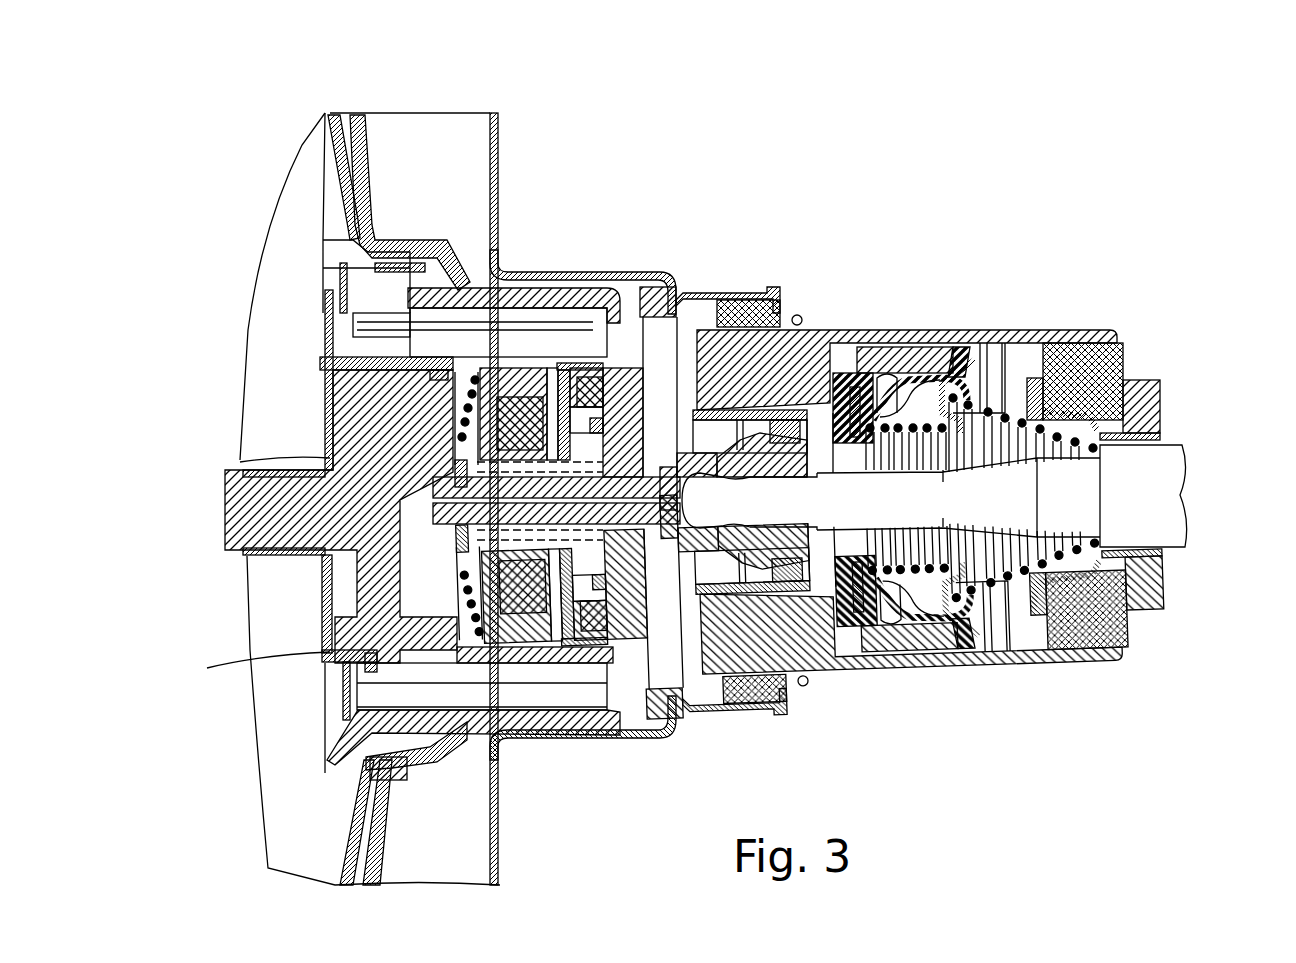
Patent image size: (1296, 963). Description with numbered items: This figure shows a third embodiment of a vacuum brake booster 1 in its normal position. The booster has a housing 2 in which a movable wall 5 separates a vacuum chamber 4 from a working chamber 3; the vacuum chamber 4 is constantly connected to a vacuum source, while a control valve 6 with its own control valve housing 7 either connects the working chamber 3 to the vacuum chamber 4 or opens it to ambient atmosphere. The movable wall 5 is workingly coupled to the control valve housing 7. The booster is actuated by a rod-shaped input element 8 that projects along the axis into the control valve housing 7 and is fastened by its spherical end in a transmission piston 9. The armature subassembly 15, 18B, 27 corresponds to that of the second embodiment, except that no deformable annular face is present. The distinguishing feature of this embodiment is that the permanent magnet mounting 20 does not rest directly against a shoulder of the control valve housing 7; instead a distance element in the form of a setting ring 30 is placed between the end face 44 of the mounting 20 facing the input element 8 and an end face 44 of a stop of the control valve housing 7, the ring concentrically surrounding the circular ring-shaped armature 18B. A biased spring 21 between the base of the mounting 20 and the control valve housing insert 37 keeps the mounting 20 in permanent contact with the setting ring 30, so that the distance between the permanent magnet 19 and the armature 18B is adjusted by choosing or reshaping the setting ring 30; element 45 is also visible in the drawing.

The vacuum brake booster 1 is at (610, 165).
The housing 2 is at (498, 128).
The working chamber 3 is at (418, 143).
The vacuum chamber 4 is at (302, 190).
The movable wall 5 is at (328, 113).
The control valve 6 is at (1017, 273).
The control valve housing 7 is at (1105, 330).
The input element 8 is at (1160, 493).
The transmission piston 9 is at (773, 548).
The armature subassembly part 15 is at (795, 400).
The armature 18B is at (545, 440).
The permanent magnet 19 is at (527, 420).
The permanent magnet mounting 20 is at (507, 380).
The biased spring 21 is at (480, 637).
The armature subassembly part 27 is at (605, 590).
The setting ring 30 is at (610, 380).
The control valve housing insert 37 is at (250, 655).
The end face 44 is at (650, 400).
The cover ring 45 is at (700, 330).